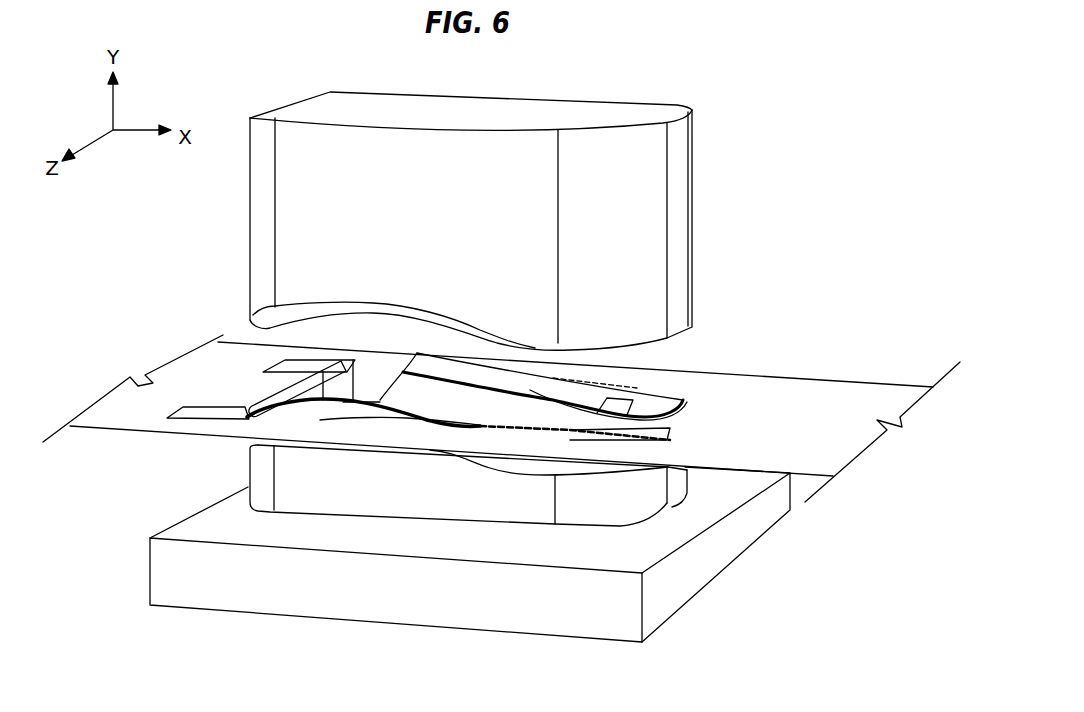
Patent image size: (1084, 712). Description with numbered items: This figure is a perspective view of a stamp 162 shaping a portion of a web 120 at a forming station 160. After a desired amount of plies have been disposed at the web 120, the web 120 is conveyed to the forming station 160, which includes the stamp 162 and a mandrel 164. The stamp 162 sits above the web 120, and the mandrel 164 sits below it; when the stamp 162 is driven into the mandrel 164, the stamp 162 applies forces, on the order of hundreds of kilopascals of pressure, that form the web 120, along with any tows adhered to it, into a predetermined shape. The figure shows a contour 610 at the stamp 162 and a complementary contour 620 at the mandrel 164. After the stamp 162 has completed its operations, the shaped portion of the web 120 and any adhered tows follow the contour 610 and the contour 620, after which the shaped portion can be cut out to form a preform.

The forming station 160 is at (449, 192).
The stamp 162 is at (262, 185).
The contour 610 is at (312, 312).
The web 120 is at (793, 388).
The contour 620 is at (523, 463).
The mandrel 164 is at (242, 598).